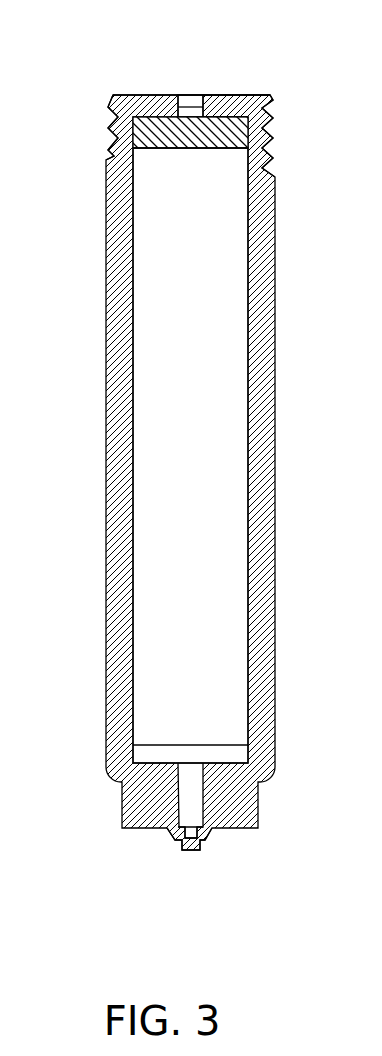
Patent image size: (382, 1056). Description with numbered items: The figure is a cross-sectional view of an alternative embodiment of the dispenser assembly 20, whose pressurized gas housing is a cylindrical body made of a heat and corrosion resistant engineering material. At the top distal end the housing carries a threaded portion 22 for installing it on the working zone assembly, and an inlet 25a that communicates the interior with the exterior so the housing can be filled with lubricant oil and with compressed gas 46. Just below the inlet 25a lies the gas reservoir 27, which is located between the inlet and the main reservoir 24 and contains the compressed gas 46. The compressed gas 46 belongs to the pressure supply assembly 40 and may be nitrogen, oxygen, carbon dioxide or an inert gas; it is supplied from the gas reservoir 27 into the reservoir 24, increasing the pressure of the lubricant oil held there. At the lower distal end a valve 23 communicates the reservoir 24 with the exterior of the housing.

The dispenser assembly 20 is at (100, 660).
The threaded portion 22 is at (112, 103).
The valve 23 is at (185, 818).
The reservoir 24 is at (145, 530).
The inlet 25a is at (188, 94).
The gas reservoir 27 is at (232, 150).
The pressure supply assembly 40 is at (112, 151).
The compressed gas 46 is at (226, 117).